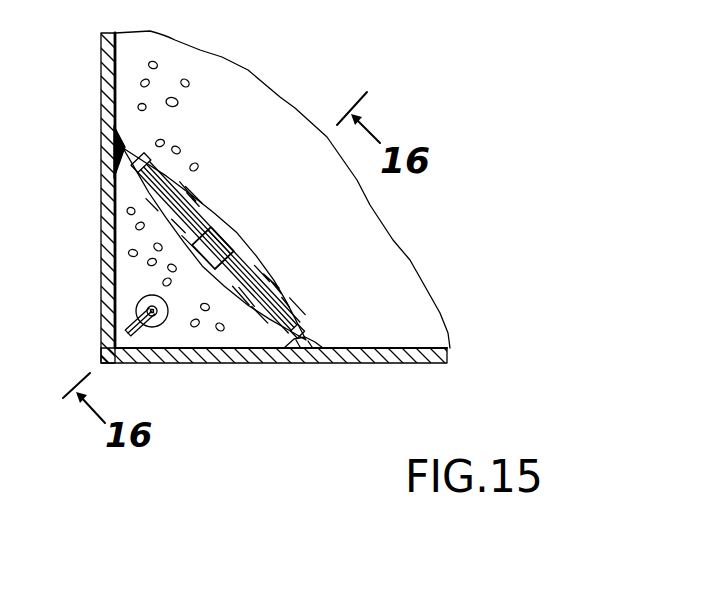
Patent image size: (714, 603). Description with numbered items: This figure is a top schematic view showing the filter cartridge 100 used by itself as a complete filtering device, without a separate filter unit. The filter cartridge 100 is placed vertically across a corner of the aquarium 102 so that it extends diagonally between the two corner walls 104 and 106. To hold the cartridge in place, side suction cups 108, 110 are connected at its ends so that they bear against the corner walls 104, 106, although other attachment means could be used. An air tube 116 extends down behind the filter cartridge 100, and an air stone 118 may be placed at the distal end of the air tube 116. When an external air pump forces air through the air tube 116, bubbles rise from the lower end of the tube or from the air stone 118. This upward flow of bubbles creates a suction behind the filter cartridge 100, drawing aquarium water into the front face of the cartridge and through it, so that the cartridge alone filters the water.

The filter cartridge 100 is at (212, 191).
The aquarium 102 is at (267, 371).
The corner wall 104 is at (348, 345).
The corner wall 106 is at (108, 118).
The side suction cup 108 is at (310, 344).
The side suction cup 110 is at (121, 147).
The air tube 116 is at (128, 328).
The air stone 118 is at (166, 325).